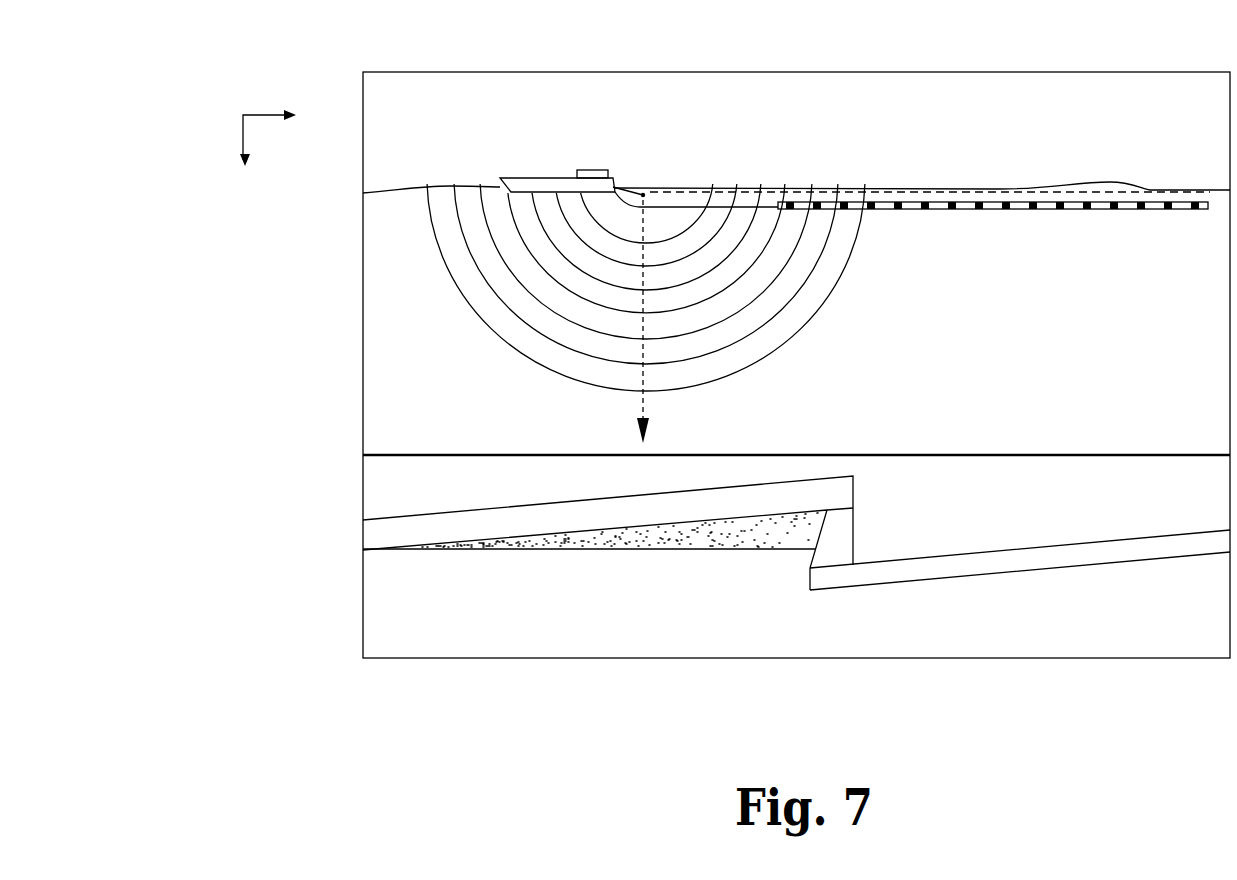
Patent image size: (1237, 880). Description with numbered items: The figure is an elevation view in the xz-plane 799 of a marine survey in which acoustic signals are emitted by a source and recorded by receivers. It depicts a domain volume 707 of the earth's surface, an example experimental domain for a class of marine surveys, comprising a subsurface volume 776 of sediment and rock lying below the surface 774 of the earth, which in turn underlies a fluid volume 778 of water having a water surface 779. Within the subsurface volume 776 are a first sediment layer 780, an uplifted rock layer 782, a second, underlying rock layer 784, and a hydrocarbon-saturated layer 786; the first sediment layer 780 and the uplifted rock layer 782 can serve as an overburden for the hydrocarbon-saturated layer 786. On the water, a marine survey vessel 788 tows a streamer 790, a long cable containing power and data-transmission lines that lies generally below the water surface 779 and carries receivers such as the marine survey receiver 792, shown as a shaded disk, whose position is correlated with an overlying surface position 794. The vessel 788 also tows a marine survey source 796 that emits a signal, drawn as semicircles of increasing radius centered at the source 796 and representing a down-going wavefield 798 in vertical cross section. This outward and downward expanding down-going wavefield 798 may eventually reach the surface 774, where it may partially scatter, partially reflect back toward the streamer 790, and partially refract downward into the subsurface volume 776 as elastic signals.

The domain volume 707 is at (272, 270).
The surface of the earth 774 is at (426, 455).
The subsurface volume 776 is at (383, 473).
The fluid volume 778 is at (383, 350).
The water surface 779 is at (935, 190).
The first sediment layer 780 is at (1091, 512).
The uplifted rock layer 782 is at (383, 537).
The second underlying rock layer 784 is at (500, 643).
The hydrocarbon-saturated layer 786 is at (602, 549).
The marine survey vessel 788 is at (547, 177).
The streamer 790 is at (985, 226).
The marine survey receiver 792 is at (1125, 210).
The surface position 794 is at (1125, 186).
The marine survey source 796 is at (643, 194).
The down-going wavefield 798 is at (828, 305).
The xz-plane 799 is at (243, 115).